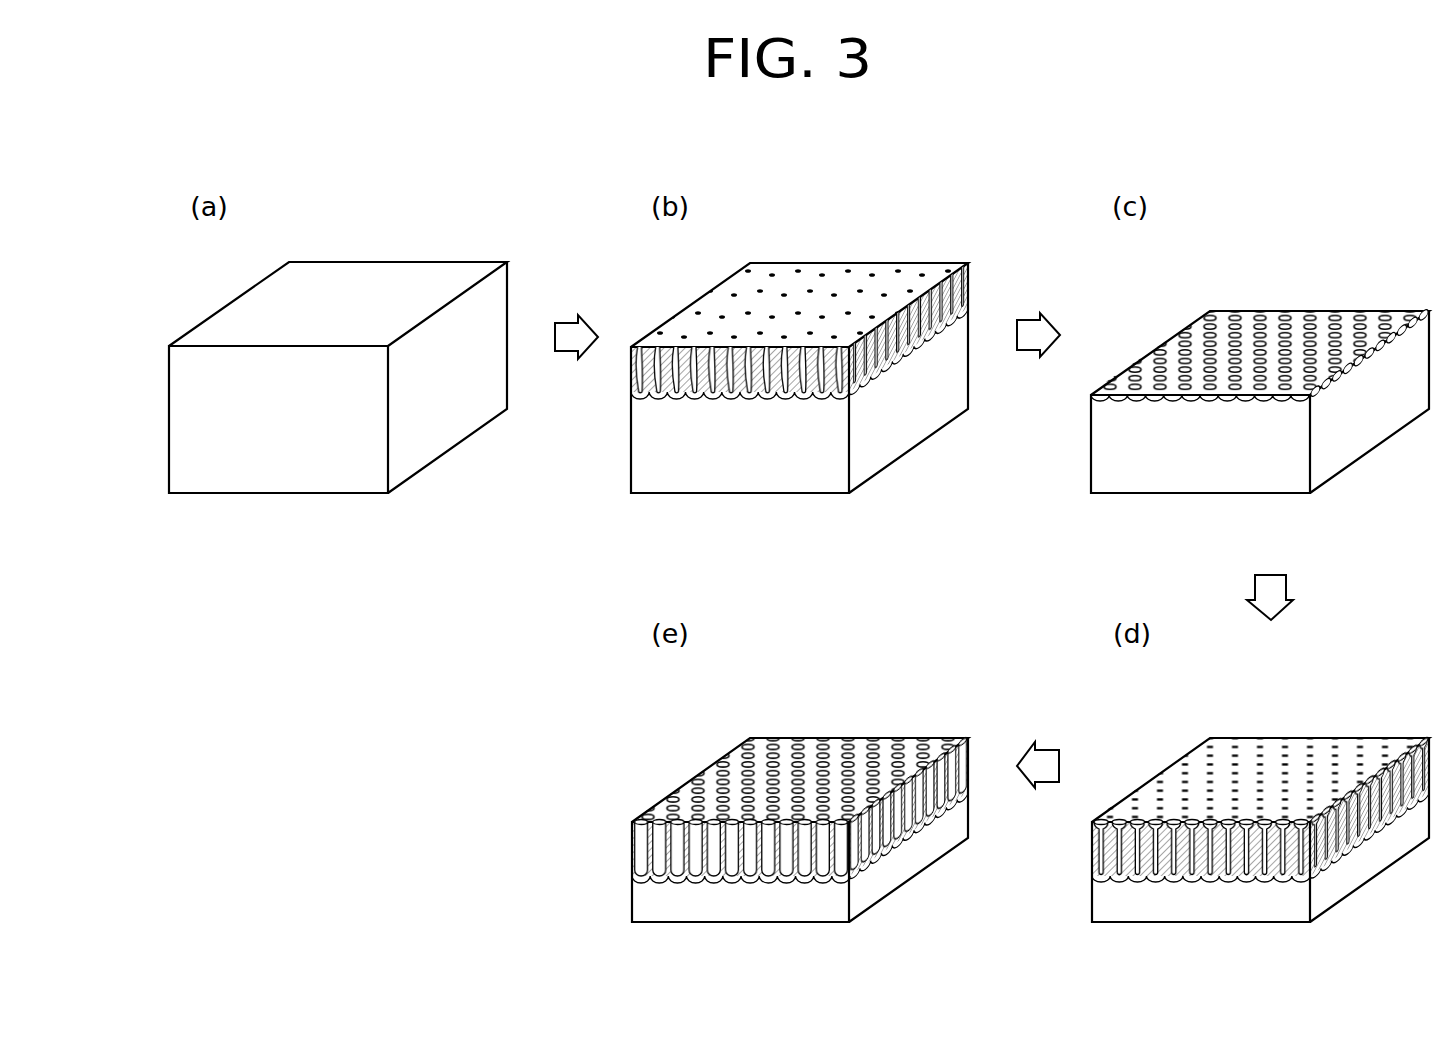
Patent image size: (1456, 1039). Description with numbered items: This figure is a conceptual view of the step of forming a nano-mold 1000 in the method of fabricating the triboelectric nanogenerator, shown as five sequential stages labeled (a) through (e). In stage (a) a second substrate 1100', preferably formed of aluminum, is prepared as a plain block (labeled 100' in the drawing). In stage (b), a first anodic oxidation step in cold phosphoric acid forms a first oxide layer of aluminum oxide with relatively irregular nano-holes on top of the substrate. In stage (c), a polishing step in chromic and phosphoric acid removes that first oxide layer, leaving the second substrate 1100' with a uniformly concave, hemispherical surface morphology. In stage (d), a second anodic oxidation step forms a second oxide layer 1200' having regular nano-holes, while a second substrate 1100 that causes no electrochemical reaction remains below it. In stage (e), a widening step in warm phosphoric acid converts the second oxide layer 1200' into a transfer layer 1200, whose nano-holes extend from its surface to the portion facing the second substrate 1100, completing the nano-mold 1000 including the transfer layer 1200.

The substrate 100' is at (527, 377).
The second substrate 1100' is at (1212, 400).
The second oxide layer 1200' is at (1213, 807).
The second substrate 1100 is at (970, 830).
The transfer layer 1200 is at (740, 808).
The nano-mold 1000 is at (940, 827).